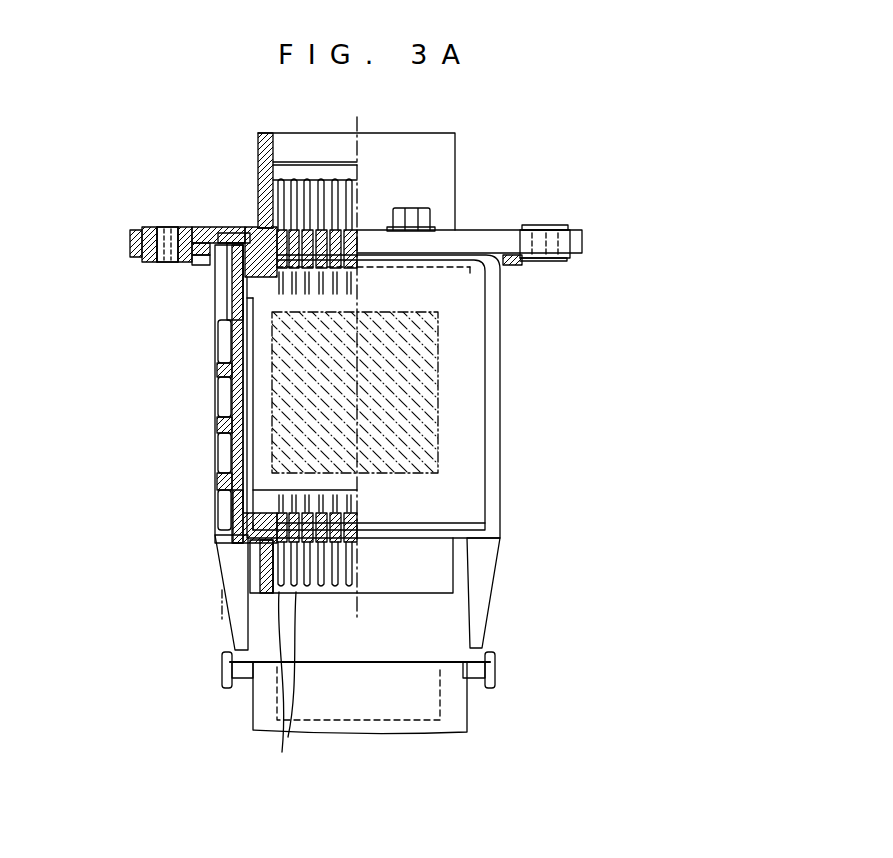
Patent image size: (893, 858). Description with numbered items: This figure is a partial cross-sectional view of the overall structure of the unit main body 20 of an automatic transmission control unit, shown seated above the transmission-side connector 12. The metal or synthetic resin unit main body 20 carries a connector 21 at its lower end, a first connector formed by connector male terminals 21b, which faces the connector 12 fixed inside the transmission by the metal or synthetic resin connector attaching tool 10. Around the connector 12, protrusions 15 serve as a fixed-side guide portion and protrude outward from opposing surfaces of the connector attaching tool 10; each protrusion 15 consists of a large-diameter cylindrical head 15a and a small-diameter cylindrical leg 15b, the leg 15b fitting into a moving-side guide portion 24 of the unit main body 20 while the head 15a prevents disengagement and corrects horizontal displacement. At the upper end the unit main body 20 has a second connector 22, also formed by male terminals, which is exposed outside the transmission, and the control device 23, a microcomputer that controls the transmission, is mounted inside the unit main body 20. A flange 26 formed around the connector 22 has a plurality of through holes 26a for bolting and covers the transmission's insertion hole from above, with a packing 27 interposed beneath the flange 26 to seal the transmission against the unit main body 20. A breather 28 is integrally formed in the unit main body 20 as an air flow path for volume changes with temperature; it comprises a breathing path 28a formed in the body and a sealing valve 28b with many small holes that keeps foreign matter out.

The connector attaching tool 10 is at (490, 728).
The connector 12 is at (377, 707).
The protrusion 15 is at (588, 625).
The large-diameter cylindrical head 15a is at (490, 670).
The small-diameter cylindrical leg 15b is at (475, 672).
The unit main body 20 is at (590, 291).
The connector 21 is at (447, 558).
The connector male terminals 21b is at (283, 689).
The connector 22 is at (457, 163).
The control device 23 is at (417, 390).
The moving-side guide portion 24 is at (482, 593).
The flange 26 is at (127, 240).
The through hole 26a is at (163, 242).
The packing 27 is at (510, 265).
The breather 28 is at (70, 268).
The breathing path 28a is at (230, 283).
The sealing valve 28b is at (195, 258).